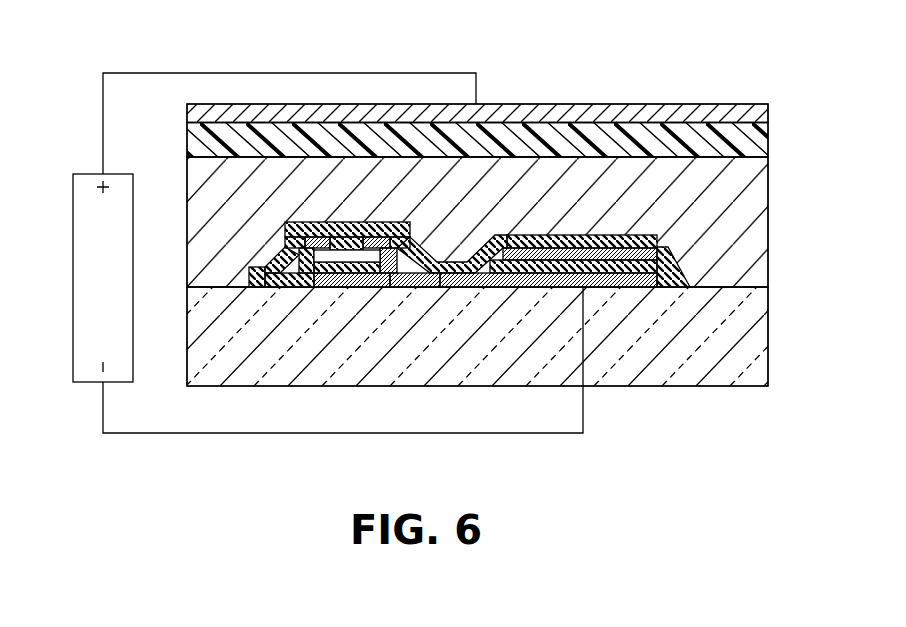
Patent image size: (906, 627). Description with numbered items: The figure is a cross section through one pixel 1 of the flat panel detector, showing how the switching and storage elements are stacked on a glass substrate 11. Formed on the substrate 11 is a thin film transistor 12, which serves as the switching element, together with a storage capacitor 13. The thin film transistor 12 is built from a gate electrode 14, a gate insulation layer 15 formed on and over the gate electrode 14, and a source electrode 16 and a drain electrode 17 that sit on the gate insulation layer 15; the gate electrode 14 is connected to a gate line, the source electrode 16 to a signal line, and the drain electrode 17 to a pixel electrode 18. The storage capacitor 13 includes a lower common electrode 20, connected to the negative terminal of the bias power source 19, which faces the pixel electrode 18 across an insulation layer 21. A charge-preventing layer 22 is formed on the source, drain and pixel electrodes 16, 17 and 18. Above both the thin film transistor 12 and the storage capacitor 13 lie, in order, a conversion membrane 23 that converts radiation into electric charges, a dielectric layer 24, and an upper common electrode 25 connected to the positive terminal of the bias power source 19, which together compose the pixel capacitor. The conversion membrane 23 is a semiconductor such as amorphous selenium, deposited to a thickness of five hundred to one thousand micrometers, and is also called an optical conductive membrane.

The pixel 1 is at (747, 410).
The glass substrate 11 is at (684, 380).
The thin film transistor 12 is at (295, 298).
The storage capacitor 13 is at (530, 298).
The gate electrode 14 is at (350, 288).
The gate insulation layer 15 is at (417, 288).
The source electrode 16 is at (272, 244).
The drain electrode 17 is at (411, 238).
The pixel electrode 18 is at (658, 254).
The bias power source 19 is at (73, 283).
The lower common electrode 20 is at (647, 287).
The insulation layer 21 is at (690, 281).
The charge-preventing layer 22 is at (618, 235).
The conversion membrane 23 is at (597, 172).
The dielectric layer 24 is at (657, 140).
The upper common electrode 25 is at (710, 108).